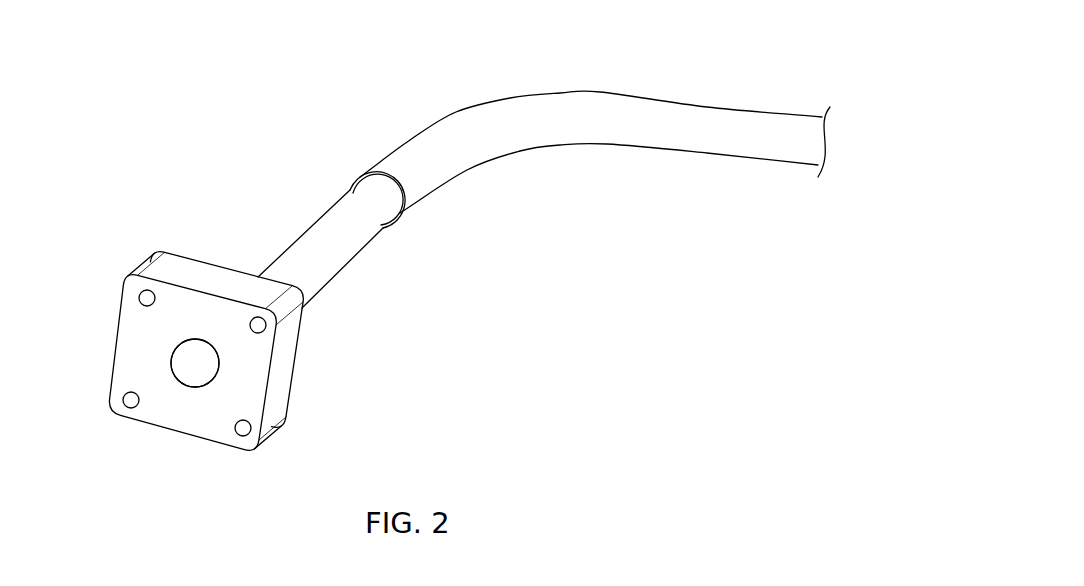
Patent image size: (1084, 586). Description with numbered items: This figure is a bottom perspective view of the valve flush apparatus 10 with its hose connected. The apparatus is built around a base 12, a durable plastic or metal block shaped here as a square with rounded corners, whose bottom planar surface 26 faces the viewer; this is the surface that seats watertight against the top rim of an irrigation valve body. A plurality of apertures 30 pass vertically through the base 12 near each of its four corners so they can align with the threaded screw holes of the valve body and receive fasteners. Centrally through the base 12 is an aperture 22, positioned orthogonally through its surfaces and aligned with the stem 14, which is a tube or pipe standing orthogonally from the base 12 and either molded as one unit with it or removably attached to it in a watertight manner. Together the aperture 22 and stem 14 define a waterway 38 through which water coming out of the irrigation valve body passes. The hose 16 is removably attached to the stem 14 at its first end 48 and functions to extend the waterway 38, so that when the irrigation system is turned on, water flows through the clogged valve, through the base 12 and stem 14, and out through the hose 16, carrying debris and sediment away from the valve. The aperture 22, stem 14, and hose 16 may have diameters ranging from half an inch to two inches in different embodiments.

The valve flush apparatus 10 is at (197, 78).
The base 12 is at (163, 250).
The stem 14 is at (333, 232).
The hose 16 is at (456, 125).
The aperture 22 is at (219, 362).
The bottom planar surface 26 is at (148, 347).
The plurality of apertures 30 is at (137, 408).
The waterway 38 is at (184, 374).
The first end 48 is at (393, 178).